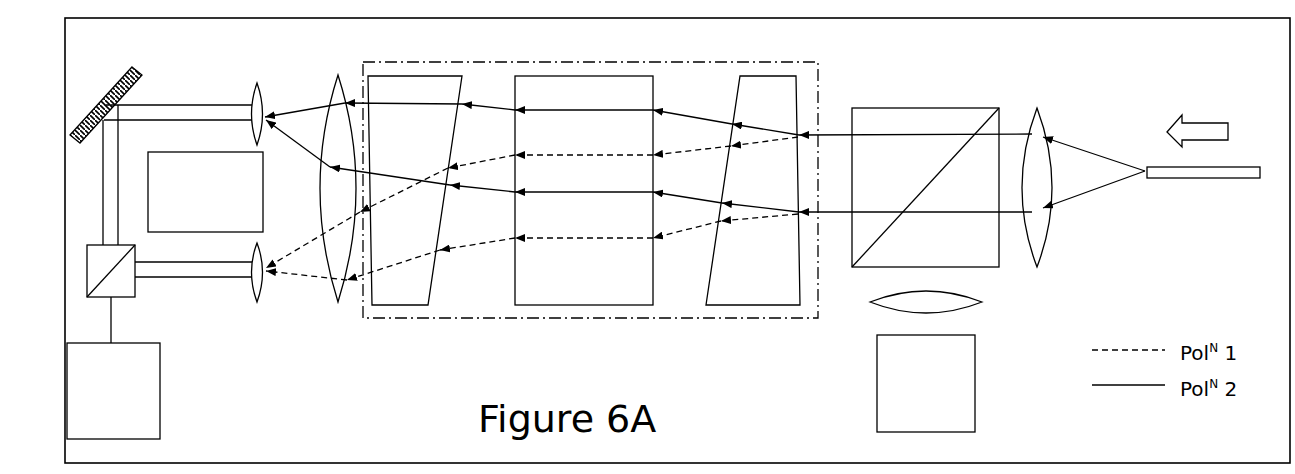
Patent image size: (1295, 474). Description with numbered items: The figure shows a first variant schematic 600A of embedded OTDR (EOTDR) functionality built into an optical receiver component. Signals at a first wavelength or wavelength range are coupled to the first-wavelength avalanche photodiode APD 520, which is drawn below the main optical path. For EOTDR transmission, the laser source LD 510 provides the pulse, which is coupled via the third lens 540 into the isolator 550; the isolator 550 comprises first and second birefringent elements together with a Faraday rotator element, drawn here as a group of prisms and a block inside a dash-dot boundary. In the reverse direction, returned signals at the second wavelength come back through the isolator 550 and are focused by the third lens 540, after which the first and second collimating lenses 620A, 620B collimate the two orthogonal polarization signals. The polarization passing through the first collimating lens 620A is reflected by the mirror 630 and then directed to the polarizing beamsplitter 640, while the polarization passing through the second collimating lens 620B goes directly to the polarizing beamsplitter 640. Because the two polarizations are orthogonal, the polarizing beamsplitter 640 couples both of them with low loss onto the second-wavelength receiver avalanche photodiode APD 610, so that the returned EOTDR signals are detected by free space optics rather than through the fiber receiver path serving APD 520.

The first variant schematic 600A is at (677, 240).
The mirror 630 is at (133, 97).
The first collimating lens 620A is at (266, 98).
The second collimating lens 620B is at (231, 285).
The third lens 540 is at (339, 175).
The LD λ2 510 is at (205, 192).
The polarizing beamsplitter 640 is at (103, 286).
The APD λ2 610 is at (113, 391).
The isolator 550 is at (590, 207).
The APD λ1 520 is at (926, 383).